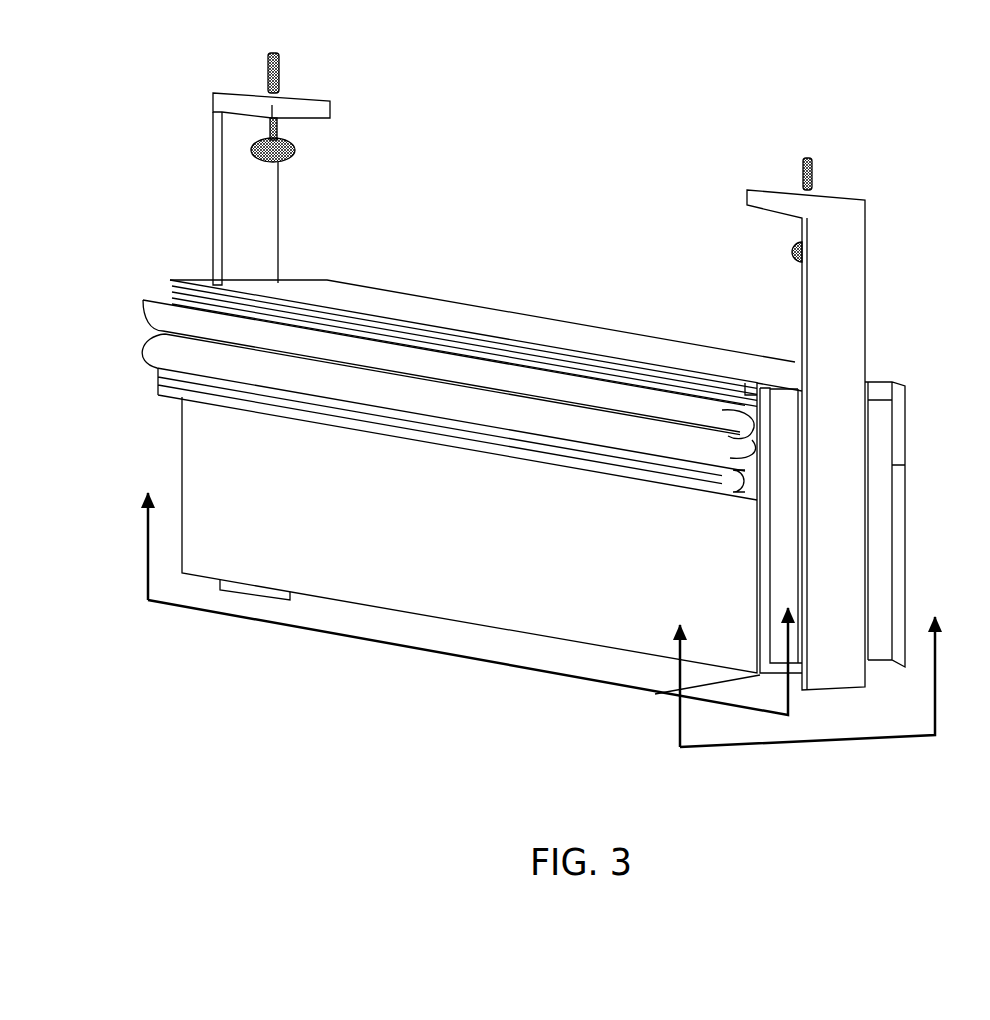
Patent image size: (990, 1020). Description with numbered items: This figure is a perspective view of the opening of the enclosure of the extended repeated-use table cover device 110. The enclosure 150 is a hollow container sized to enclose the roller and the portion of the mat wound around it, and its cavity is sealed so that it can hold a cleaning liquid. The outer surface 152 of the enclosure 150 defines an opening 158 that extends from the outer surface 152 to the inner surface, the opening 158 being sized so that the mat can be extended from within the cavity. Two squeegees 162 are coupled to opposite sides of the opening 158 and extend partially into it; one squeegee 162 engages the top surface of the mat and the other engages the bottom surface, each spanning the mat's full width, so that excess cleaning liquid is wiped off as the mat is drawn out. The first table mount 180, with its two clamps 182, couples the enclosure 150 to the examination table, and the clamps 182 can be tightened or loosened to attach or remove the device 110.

The extended repeated-use table cover device 110 is at (912, 111).
The enclosure 150 is at (166, 480).
The outer surface 152 is at (202, 445).
The opening 158 is at (752, 450).
The squeegees 162 is at (432, 403).
The first table mount 180 is at (208, 156).
The clamps 182 is at (309, 146).